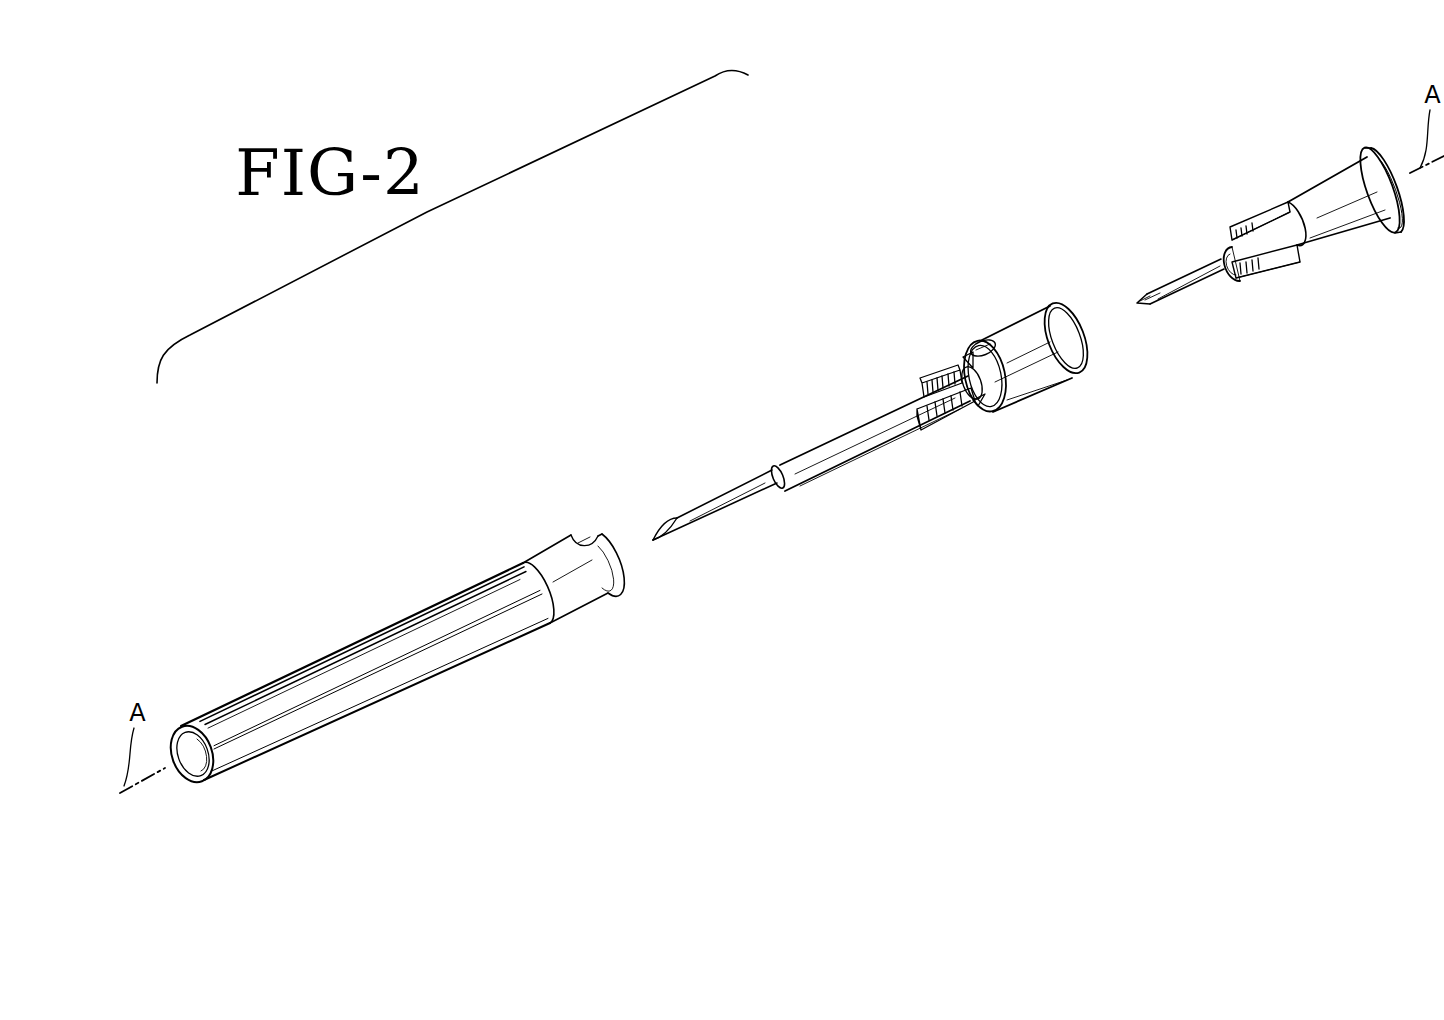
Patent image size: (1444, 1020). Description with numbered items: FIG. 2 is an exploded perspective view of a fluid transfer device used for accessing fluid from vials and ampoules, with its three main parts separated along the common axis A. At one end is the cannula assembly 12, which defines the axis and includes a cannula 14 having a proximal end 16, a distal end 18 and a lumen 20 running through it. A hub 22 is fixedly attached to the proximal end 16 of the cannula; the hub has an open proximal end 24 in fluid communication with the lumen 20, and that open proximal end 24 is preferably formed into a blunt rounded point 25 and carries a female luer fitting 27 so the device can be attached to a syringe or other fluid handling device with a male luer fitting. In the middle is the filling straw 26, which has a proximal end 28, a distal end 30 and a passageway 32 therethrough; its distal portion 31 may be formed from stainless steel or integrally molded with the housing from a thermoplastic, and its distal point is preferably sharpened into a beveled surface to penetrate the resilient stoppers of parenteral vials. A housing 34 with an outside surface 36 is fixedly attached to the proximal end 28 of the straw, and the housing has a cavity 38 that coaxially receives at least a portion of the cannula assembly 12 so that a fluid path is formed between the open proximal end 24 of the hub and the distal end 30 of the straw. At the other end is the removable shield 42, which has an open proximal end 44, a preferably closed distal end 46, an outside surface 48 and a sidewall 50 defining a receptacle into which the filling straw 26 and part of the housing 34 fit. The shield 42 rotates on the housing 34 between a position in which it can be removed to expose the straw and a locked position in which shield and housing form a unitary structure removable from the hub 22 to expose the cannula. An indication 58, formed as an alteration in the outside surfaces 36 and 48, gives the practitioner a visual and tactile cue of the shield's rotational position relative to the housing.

The cannula assembly 12 is at (1248, 227).
The cannula 14 is at (1168, 300).
The proximal end 16 is at (1212, 278).
The distal end 18 is at (1143, 307).
The lumen 20 is at (1148, 310).
The hub 22 is at (1318, 216).
The open proximal end 24 is at (1383, 240).
The blunt rounded point 25 is at (1137, 308).
The filling straw 26 is at (811, 472).
The female luer fitting 27 is at (1405, 212).
The proximal end 28 is at (821, 482).
The distal end 30 is at (660, 548).
The distal portion 31 is at (713, 520).
The passageway 32 is at (672, 532).
The housing 34 is at (1029, 354).
The outside surface 36 is at (1018, 406).
The cavity 38 is at (1084, 374).
The removable shield 42 is at (580, 564).
The open proximal end 44 is at (616, 590).
The closed distal end 46 is at (193, 786).
The outside surface 48 is at (549, 548).
The sidewall 50 is at (404, 690).
The indication 58 is at (590, 537).